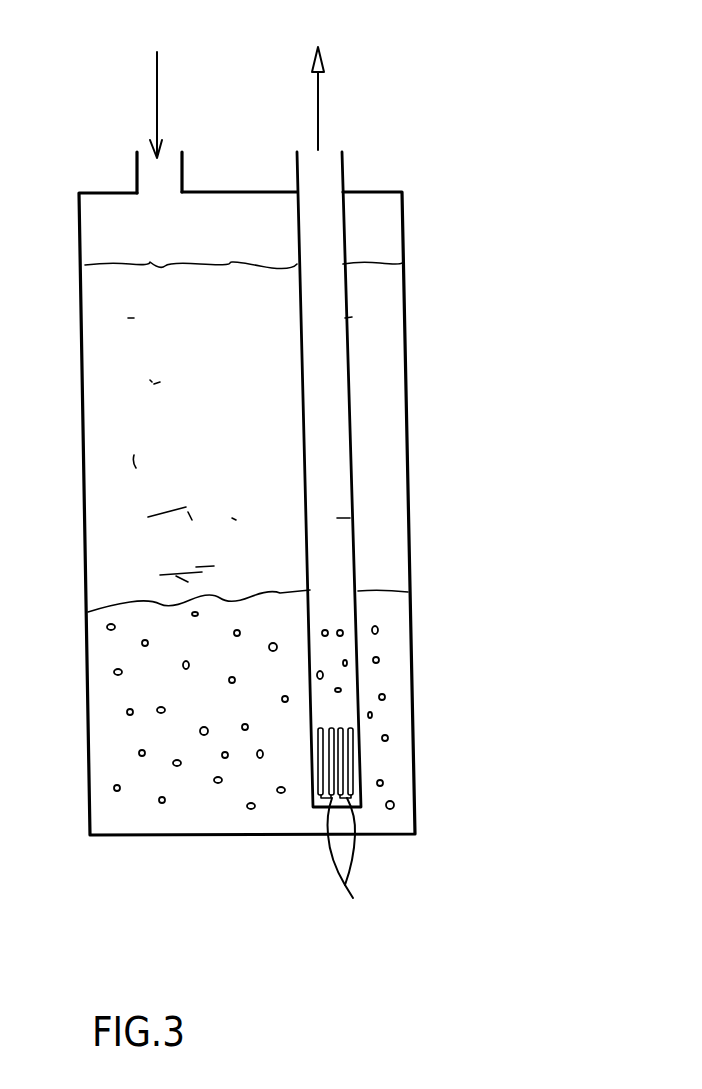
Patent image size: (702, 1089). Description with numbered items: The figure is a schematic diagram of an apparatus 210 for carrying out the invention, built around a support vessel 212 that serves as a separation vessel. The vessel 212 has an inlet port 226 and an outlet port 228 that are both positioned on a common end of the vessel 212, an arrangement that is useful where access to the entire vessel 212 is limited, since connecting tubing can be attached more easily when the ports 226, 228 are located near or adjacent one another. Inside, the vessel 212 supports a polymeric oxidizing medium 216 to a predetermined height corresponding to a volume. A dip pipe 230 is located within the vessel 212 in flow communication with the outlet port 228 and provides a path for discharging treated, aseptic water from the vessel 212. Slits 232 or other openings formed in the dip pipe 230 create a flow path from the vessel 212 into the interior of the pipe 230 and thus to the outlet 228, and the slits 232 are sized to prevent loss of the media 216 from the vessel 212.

The apparatus 210 is at (423, 298).
The support vessel 212 is at (408, 415).
The polymeric oxidizing medium 216 is at (387, 680).
The inlet port 226 is at (137, 168).
The outlet port 228 is at (343, 157).
The dip pipe 230 is at (338, 540).
The slits 232 is at (368, 834).